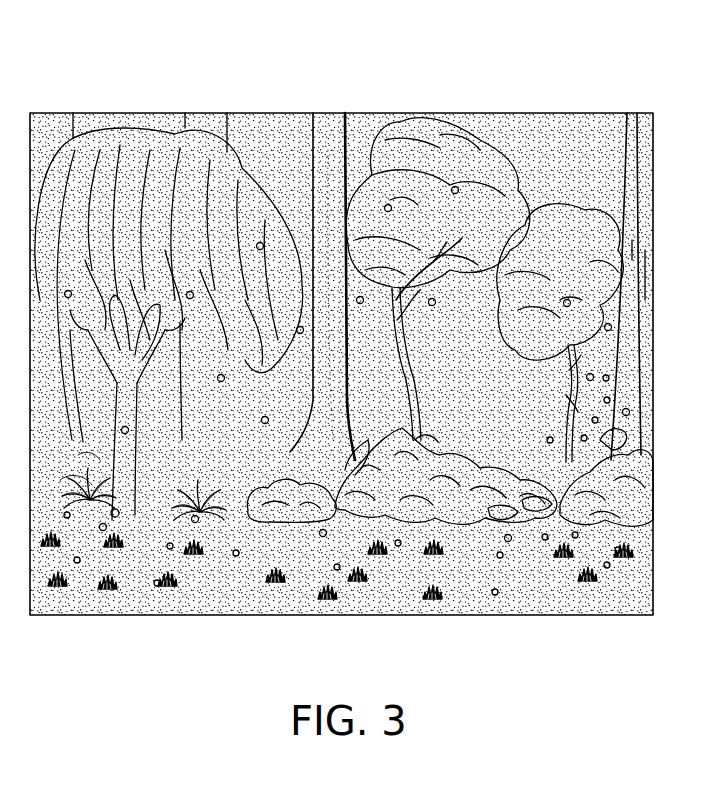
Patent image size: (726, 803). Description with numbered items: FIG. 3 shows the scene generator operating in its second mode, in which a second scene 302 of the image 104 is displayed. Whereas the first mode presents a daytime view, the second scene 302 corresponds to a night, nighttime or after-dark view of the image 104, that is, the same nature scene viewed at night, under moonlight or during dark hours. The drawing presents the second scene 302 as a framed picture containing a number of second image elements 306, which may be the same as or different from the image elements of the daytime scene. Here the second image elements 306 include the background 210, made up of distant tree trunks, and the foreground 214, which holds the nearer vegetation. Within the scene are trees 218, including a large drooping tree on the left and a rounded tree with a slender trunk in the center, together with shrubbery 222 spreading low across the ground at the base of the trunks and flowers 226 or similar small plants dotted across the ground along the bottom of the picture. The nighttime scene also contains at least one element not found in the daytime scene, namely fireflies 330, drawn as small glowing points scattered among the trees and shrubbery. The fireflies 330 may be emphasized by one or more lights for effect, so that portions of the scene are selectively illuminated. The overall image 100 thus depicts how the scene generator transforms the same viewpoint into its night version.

The display image / environment 100 is at (470, 638).
The image 104 is at (58, 137).
The background 210 is at (262, 138).
The foreground 214 is at (425, 158).
The trees 218 is at (418, 378).
The shrubbery 222 is at (468, 446).
The flowers 226 is at (357, 568).
The second scene 302 is at (470, 92).
The second image elements 306 is at (549, 262).
The fireflies 330 is at (611, 325).